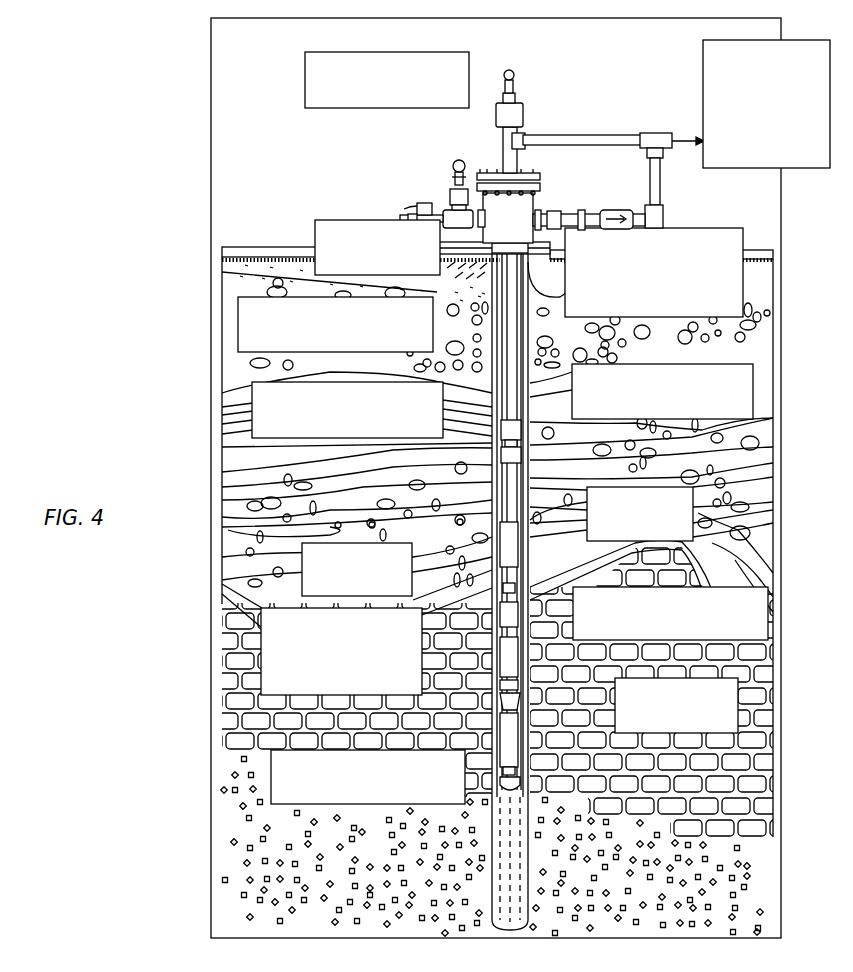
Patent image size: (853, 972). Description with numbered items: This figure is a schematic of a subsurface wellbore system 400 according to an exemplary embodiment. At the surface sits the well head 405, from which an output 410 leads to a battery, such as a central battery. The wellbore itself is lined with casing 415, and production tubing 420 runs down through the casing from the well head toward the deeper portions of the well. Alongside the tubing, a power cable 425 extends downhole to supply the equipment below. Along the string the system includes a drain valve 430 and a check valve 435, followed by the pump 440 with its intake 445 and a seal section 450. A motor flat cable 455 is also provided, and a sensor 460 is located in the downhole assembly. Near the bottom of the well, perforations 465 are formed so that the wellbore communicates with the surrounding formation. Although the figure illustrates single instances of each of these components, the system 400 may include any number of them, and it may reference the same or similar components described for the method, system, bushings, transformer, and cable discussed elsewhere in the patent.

The subsurface wellbore system 400 is at (89, 466).
The well head 405 is at (387, 80).
The output to a battery 410 is at (676, 135).
The casing 415 is at (432, 172).
The production tubing 420 is at (508, 270).
The power cable 425 is at (497, 320).
The drain valve 430 is at (508, 387).
The check valve 435 is at (502, 412).
The pump 440 is at (528, 515).
The intake 445 is at (507, 568).
The seal section 450 is at (507, 611).
The motor flat cable 455 is at (500, 618).
The sensor 460 is at (520, 703).
The perforations 465 is at (492, 780).